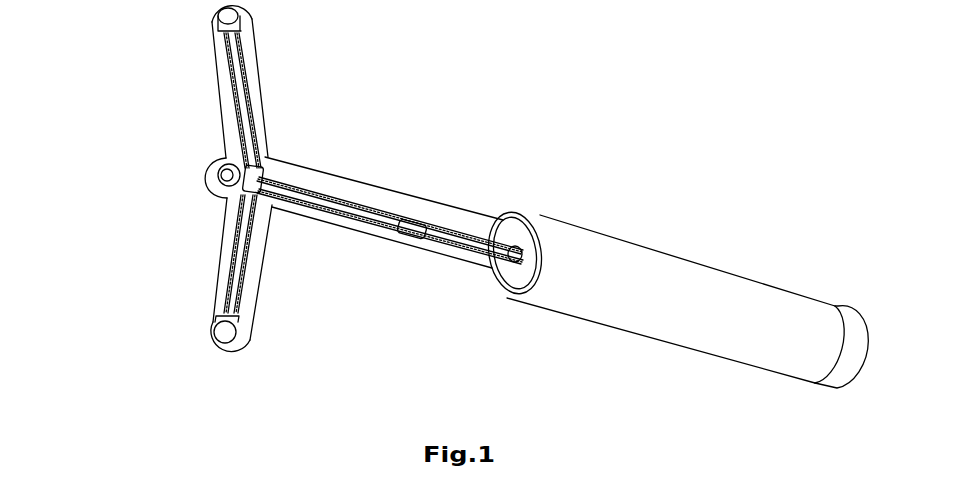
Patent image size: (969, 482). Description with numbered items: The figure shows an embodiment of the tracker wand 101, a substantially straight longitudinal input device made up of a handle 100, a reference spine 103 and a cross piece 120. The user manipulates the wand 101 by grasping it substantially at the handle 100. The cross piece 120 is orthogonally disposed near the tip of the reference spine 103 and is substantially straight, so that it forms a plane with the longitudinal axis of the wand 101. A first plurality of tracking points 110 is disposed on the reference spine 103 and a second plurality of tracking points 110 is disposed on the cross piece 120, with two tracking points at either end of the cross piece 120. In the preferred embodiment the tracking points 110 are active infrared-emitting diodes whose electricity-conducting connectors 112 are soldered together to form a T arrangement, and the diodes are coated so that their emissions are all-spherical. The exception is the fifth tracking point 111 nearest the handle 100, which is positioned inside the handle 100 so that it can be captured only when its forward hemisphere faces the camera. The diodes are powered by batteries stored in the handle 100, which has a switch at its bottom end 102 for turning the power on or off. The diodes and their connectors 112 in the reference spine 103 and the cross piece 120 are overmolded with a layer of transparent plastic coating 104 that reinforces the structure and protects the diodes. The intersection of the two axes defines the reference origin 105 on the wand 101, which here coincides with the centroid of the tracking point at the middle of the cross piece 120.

The handle 100 is at (667, 265).
The wand 101 is at (665, 141).
The bottom end 102 is at (848, 313).
The reference spine 103 is at (426, 242).
The transparent plastic coating 104 is at (350, 228).
The reference origin 105 is at (225, 173).
The tracking points 110 is at (507, 227).
The fifth tracking point 111 is at (496, 278).
The electricity-conducting connectors 112 is at (229, 290).
The cross piece 120 is at (227, 250).